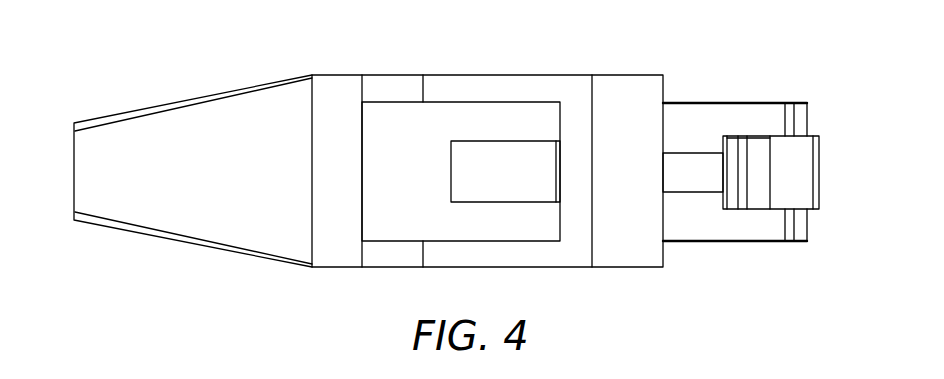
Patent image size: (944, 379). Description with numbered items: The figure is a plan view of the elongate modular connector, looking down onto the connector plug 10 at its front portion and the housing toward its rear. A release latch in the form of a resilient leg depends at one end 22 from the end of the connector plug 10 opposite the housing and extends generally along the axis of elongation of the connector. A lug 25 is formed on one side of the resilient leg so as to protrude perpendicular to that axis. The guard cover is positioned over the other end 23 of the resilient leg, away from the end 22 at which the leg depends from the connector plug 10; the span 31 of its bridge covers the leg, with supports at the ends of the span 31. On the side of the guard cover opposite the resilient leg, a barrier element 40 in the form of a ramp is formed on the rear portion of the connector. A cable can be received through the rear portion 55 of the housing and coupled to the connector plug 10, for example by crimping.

The connector plug 10 is at (810, 118).
The end of the leg 22 is at (795, 170).
The end of the resilient leg 23 is at (672, 164).
The lug 25 is at (729, 148).
The span 31 is at (634, 90).
The barrier element 40 is at (466, 170).
The rear portion of the housing 55 is at (193, 92).